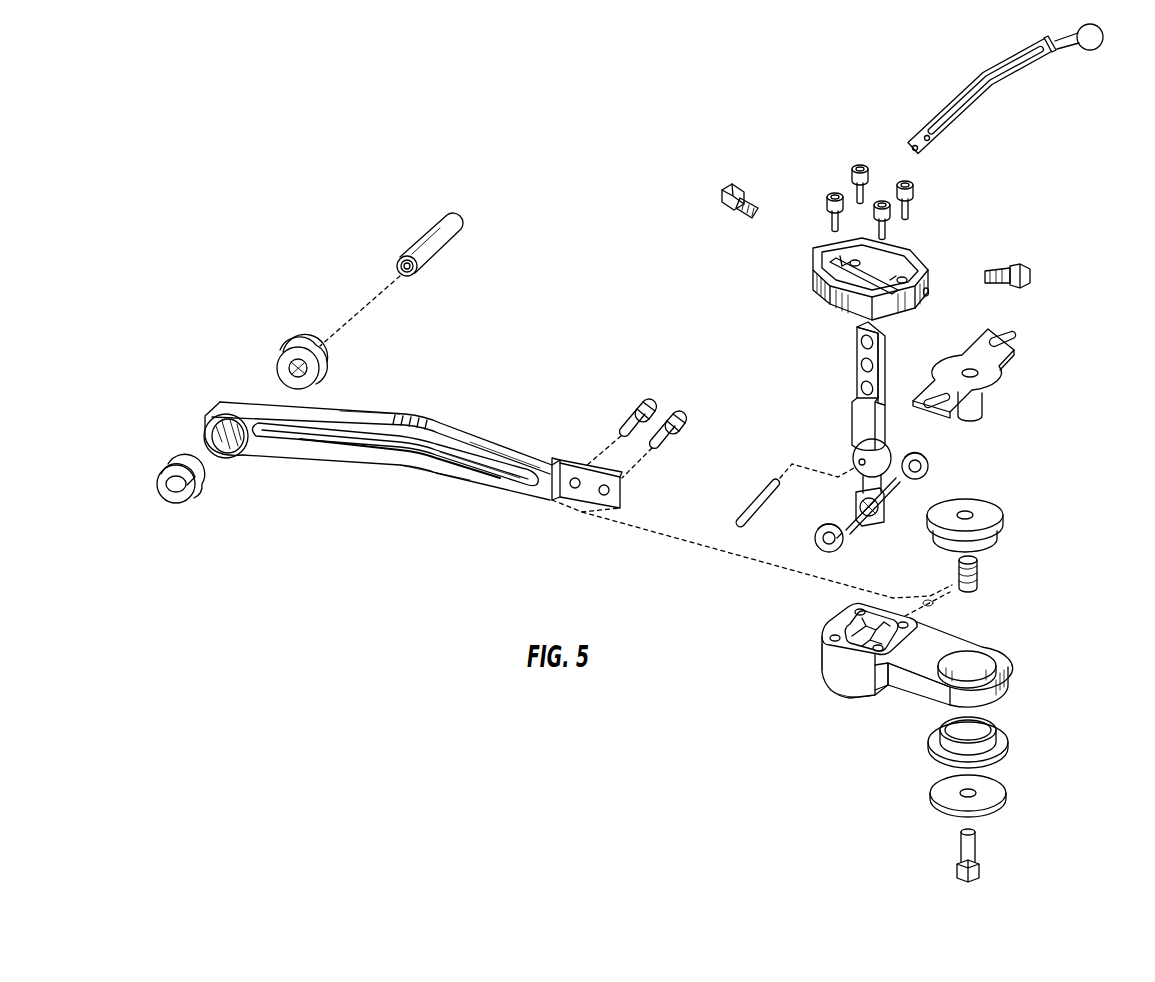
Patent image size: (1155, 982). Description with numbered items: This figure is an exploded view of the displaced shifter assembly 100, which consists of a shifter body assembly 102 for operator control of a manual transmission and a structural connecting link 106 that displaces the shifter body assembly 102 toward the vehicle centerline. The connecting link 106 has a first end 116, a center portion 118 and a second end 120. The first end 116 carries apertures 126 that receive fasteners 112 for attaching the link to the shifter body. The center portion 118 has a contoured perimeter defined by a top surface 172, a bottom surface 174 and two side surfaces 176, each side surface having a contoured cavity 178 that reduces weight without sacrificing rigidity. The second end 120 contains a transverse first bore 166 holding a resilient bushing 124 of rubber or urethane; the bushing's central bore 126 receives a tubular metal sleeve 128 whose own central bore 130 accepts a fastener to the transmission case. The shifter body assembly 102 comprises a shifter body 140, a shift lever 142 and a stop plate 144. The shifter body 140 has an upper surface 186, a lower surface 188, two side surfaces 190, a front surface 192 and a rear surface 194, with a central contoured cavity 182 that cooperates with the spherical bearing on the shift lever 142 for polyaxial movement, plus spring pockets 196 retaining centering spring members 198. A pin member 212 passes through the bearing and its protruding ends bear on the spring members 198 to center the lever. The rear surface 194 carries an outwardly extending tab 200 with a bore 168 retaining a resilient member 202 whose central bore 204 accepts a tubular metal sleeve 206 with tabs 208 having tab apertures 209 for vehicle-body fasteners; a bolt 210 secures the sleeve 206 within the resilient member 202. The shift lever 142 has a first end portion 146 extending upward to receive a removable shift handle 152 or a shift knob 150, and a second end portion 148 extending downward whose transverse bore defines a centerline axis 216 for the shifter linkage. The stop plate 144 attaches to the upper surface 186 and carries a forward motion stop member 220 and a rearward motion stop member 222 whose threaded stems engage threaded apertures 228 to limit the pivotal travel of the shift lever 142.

The shifter assembly 100 is at (440, 156).
The shifter body assembly 102 is at (1048, 505).
The connecting link 106 is at (425, 420).
The fasteners 112 is at (680, 410).
The first end 116 is at (570, 464).
The center portion 118 is at (372, 412).
The second end 120 is at (236, 405).
The resilient bushing 124 is at (298, 346).
The apertures / central bore 126 is at (606, 490).
The tubular metal sleeve 128 is at (436, 242).
The central bore 130 is at (418, 274).
The shifter body 140 is at (842, 690).
The shift lever 142 is at (855, 426).
The stop plate 144 is at (905, 246).
The first end portion 146 is at (886, 329).
The second end portion 148 is at (882, 513).
The shift knob 150 is at (1088, 44).
The shift handle 152 is at (934, 142).
The first bore 166 is at (236, 445).
The bore 168 is at (1000, 656).
The top surface 172 is at (500, 446).
The bottom surface 174 is at (432, 470).
The side surfaces 176 is at (327, 442).
The contoured cavity 178 is at (520, 482).
The contoured cavity 182 is at (832, 637).
The upper surface 186 is at (932, 600).
The lower surface 188 is at (852, 702).
The side surfaces 190 is at (826, 665).
The front surface 192 is at (850, 622).
The rear surface 194 is at (880, 682).
The spring pockets 196 is at (886, 612).
The spring members 198 is at (978, 562).
The outwardly extending tab 200 is at (988, 648).
The resilient member 202 is at (1006, 750).
The central bore 204 is at (992, 722).
The tubular metal sleeve 206 is at (985, 404).
The tabs 208 is at (1030, 353).
The tab apertures 209 is at (1010, 340).
The bolt 210 is at (978, 846).
The pin member 212 is at (758, 498).
The centerline axis 216 is at (908, 482).
The forward motion stop member 220 is at (743, 196).
The rearward motion stop member 222 is at (1020, 270).
The threaded apertures 228 is at (934, 294).